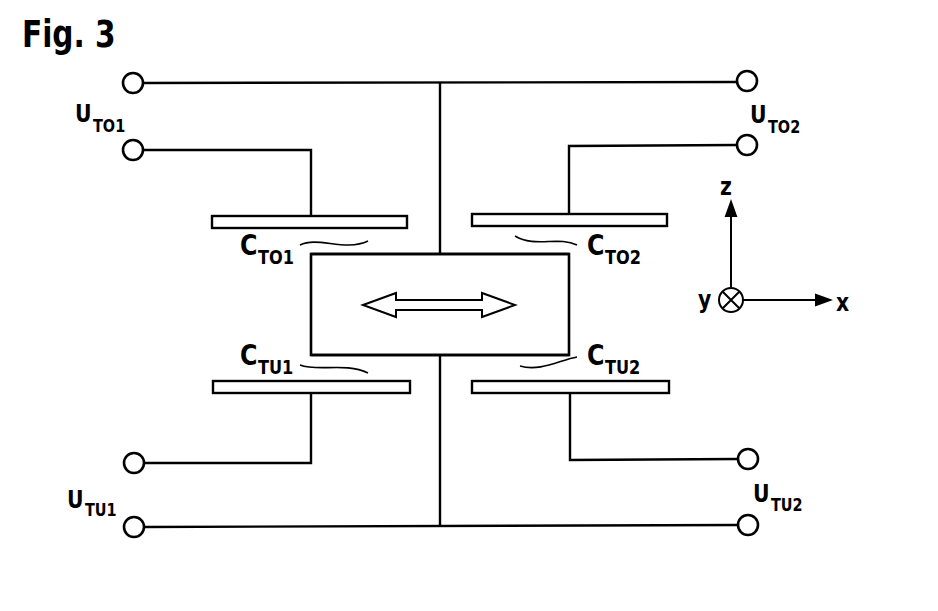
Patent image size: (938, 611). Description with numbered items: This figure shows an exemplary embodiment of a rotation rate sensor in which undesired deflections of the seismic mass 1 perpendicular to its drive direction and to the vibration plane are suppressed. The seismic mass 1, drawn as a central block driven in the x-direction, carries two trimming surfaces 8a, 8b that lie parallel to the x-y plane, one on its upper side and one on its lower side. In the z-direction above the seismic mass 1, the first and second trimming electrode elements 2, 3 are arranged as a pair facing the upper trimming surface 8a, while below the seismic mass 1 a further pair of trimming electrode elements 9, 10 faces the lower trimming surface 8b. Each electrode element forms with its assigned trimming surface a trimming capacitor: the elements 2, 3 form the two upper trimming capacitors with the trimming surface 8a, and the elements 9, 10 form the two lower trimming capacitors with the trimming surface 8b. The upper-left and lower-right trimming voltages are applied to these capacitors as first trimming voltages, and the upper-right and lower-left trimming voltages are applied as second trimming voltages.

The seismic mass 1 is at (612, 326).
The first trimming electrode element 2 is at (364, 218).
The second trimming electrode element 3 is at (515, 216).
The trimming surface 8a is at (421, 246).
The trimming surface 8b is at (421, 364).
The trimming electrode element 9 is at (366, 393).
The trimming electrode element 10 is at (521, 393).